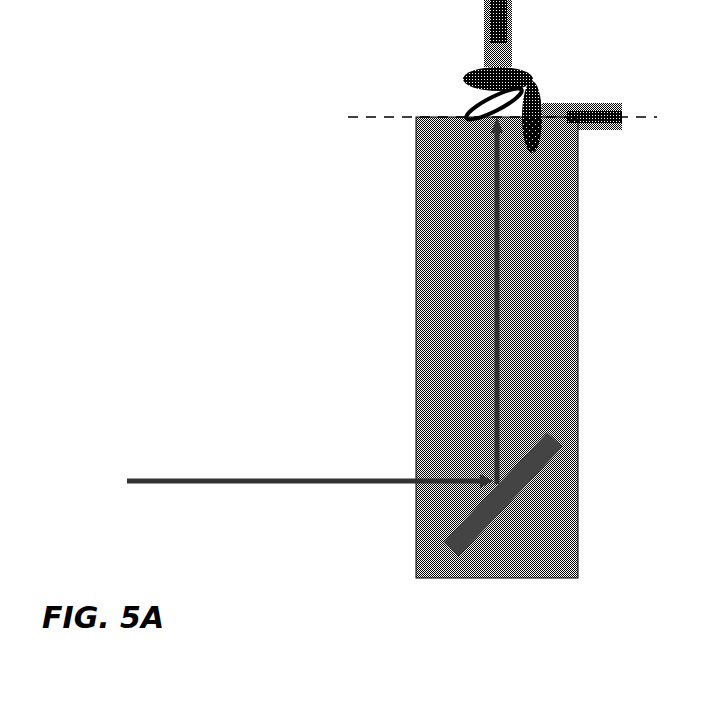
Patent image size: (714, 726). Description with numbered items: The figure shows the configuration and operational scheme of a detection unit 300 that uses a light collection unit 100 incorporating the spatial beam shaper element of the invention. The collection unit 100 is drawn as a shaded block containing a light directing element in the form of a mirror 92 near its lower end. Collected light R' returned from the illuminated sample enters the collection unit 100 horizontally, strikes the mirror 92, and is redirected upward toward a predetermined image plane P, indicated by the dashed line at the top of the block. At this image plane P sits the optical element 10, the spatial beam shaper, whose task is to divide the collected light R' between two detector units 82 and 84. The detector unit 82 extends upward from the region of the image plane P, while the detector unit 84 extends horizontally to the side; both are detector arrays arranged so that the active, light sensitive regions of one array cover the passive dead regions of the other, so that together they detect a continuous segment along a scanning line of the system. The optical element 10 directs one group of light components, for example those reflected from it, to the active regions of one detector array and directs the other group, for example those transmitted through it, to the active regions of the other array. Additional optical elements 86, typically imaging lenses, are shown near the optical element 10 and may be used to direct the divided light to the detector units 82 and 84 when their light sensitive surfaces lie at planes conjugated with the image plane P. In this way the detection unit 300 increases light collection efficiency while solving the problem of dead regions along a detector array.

The detection unit 300 is at (339, 87).
The collection unit 100 is at (352, 347).
The detector unit 82 is at (483, 8).
The additional optical elements 86 is at (545, 107).
The detector unit 84 is at (592, 128).
The spatial beam shaper 10 is at (500, 113).
The light directing element 92 is at (452, 535).
The image plane P is at (412, 117).
The collected light R' is at (315, 326).